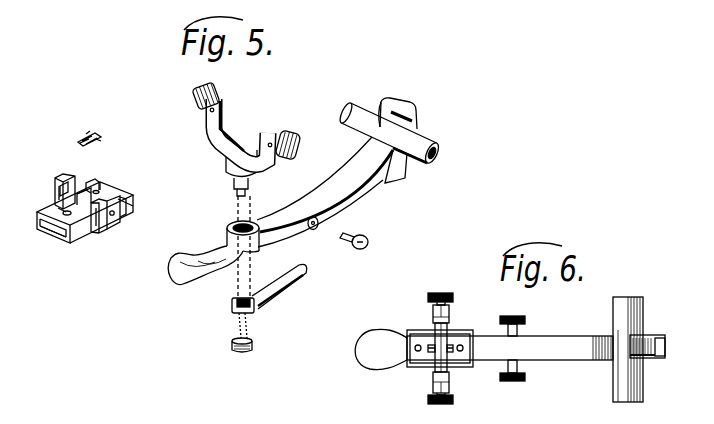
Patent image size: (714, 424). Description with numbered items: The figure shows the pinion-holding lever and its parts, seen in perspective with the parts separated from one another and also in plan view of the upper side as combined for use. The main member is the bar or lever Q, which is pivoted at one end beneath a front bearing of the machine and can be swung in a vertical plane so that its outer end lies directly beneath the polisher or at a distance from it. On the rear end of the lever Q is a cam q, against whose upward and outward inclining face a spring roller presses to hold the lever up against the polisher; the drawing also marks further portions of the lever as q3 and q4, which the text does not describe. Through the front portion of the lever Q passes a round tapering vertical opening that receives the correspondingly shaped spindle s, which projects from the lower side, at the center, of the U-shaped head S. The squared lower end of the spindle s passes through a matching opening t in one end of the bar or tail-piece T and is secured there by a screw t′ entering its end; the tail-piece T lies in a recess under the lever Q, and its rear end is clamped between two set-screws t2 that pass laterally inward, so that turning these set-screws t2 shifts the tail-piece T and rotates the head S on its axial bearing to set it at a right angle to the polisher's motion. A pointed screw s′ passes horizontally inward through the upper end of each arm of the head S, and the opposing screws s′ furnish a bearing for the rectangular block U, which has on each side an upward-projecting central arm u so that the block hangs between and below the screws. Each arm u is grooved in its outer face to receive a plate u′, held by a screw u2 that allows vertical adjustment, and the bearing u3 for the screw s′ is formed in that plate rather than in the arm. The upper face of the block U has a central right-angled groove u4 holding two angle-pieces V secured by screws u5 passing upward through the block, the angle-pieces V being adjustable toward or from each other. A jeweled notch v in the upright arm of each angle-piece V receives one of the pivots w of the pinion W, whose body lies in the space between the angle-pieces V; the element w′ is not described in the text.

In FIG. 5, the U-shaped head S is at (276, 132).
In FIG. 5, the screw s′ is at (194, 96).
In FIG. 6, the screw s′ is at (441, 294).
In FIG. 5, the spindle s is at (234, 185).
In FIG. 5, the cam q is at (232, 221).
In FIG. 5, the lever Q is at (320, 206).
In FIG. 6, the lever Q is at (484, 349).
In FIG. 5, the collar q3 is at (411, 114).
In FIG. 6, the collar q3 is at (666, 349).
In FIG. 5, the bracket q4 is at (403, 185).
In FIG. 5, the set-screws t2 is at (355, 236).
In FIG. 6, the set-screws t2 is at (510, 316).
In FIG. 5, the opening t is at (241, 297).
In FIG. 5, the bar or tail-piece T is at (279, 286).
In FIG. 5, the screw t′ is at (249, 342).
In FIG. 5, the angle-pieces V is at (118, 196).
In FIG. 6, the angle-pieces V is at (414, 348).
In FIG. 6, the block U is at (416, 332).
In FIG. 5, the arm u is at (78, 179).
In FIG. 5, the plate u′ is at (58, 177).
In FIG. 5, the screw u2 is at (115, 216).
In FIG. 5, the bearing u3 is at (124, 208).
In FIG. 5, the right-angled groove u4 is at (52, 239).
In FIG. 5, the screws u5 is at (60, 200).
In FIG. 6, the screws u5 is at (462, 343).
In FIG. 5, the jeweled notch v is at (58, 208).
In FIG. 5, the pinion W is at (88, 133).
In FIG. 5, the pivots w is at (83, 145).
In FIG. 5, the wedge edge w′ is at (100, 139).